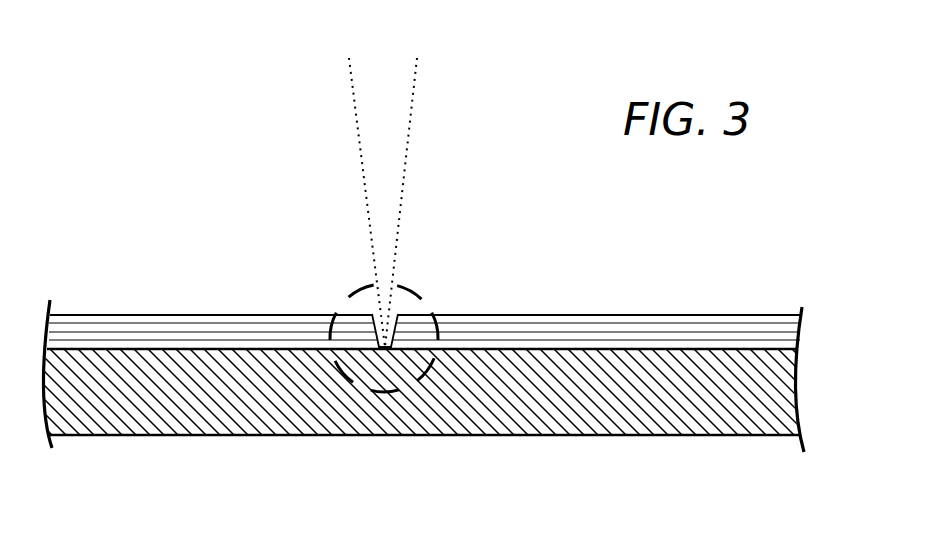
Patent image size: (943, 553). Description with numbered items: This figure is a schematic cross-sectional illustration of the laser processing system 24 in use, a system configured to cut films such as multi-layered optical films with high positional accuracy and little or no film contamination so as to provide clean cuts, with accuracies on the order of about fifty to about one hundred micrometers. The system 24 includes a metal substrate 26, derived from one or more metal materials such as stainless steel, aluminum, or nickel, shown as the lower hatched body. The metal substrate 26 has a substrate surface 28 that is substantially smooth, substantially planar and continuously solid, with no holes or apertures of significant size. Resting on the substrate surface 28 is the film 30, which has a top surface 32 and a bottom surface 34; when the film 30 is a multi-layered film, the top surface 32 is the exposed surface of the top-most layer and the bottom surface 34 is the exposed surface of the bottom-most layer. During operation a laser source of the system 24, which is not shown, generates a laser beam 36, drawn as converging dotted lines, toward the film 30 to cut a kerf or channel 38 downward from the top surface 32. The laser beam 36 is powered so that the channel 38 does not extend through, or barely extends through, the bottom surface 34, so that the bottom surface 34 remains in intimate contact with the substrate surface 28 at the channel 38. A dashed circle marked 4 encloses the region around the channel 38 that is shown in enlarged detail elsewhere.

The laser processing system 24 is at (224, 96).
The metal substrate 26 is at (141, 408).
The substrate surface 28 is at (108, 349).
The film 30 is at (652, 327).
The top surface 32 is at (557, 315).
The bottom surface 34 is at (558, 349).
The laser beam 36 is at (412, 115).
The channel 38 is at (397, 308).
The detail region of FIG. 4 is at (361, 285).